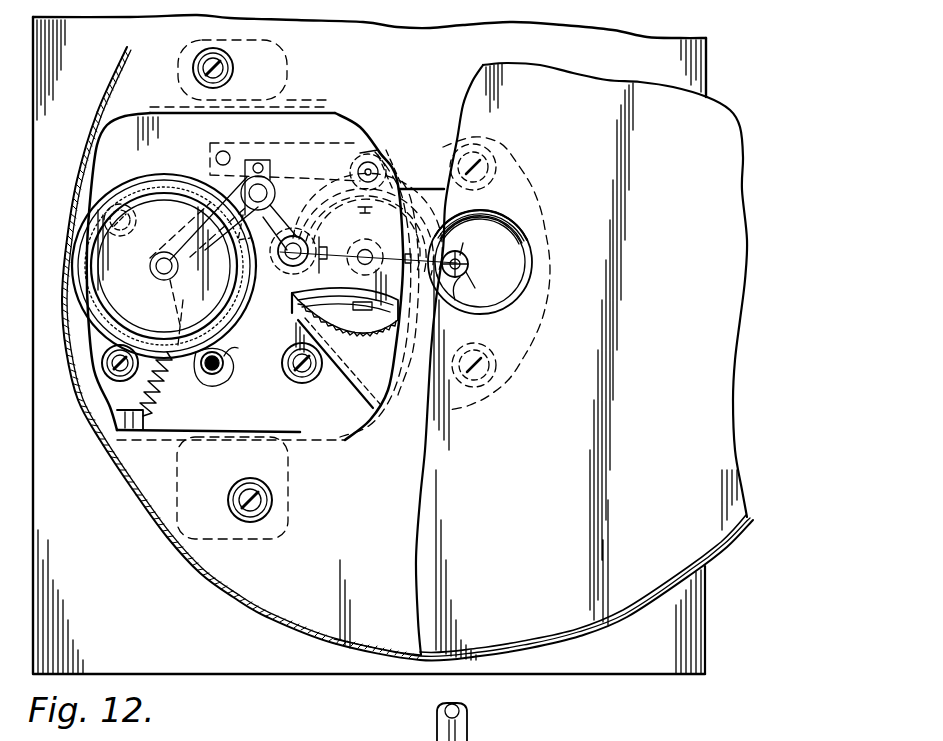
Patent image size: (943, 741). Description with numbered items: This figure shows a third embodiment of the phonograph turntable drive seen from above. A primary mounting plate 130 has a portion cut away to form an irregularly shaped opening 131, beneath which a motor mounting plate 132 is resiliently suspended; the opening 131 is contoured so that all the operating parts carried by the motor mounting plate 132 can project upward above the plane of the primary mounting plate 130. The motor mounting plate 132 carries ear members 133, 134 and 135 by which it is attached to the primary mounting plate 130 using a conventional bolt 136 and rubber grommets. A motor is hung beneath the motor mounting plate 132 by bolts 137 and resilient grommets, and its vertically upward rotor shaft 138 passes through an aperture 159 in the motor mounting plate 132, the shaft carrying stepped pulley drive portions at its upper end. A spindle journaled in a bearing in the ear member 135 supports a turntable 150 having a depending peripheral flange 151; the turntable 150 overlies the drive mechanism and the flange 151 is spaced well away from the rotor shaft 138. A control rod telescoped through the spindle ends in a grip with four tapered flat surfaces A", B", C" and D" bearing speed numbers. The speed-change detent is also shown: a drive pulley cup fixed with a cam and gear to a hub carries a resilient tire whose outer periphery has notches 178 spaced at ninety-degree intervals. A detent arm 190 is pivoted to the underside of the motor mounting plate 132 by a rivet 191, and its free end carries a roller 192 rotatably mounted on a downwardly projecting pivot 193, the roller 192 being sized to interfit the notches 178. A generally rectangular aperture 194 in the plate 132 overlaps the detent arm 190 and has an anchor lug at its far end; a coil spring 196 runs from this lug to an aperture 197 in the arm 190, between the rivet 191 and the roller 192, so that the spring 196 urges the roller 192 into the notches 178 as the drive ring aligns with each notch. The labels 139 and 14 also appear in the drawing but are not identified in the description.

The primary mounting plate 130 is at (369, 344).
The cut-away portion 131 is at (299, 440).
The motor mounting plate 132 is at (150, 116).
The ear member 133 is at (292, 55).
The ear member 134 is at (280, 521).
The ear member 135 is at (524, 347).
The bolt 136 is at (232, 500).
The bolts 137 is at (165, 266).
The rotor shaft 138 is at (229, 375).
The pawl arm 139 is at (228, 355).
The section view arrows 14 is at (468, 265).
The turntable 150 is at (543, 368).
The depending peripheral flange 151 is at (250, 596).
The aperture 159 is at (199, 380).
The notches 178 is at (363, 335).
The detent arm 190 is at (310, 152).
The rivet 191 is at (216, 155).
The roller 192 is at (372, 152).
The pivot 193 is at (381, 160).
The aperture 194 is at (262, 160).
The coil spring 196 is at (298, 228).
The aperture 197 is at (256, 162).